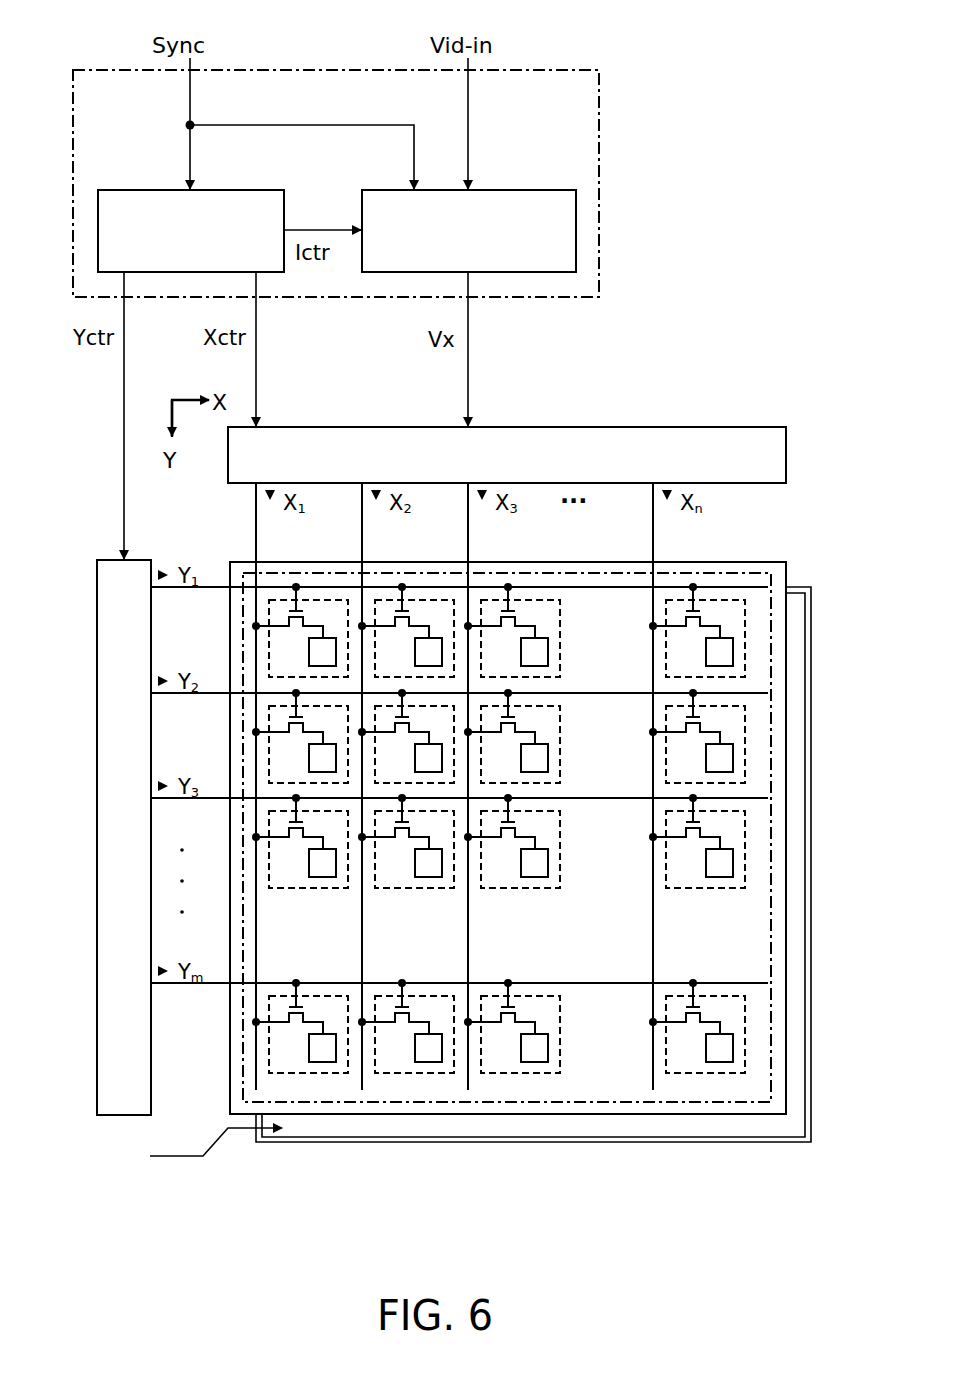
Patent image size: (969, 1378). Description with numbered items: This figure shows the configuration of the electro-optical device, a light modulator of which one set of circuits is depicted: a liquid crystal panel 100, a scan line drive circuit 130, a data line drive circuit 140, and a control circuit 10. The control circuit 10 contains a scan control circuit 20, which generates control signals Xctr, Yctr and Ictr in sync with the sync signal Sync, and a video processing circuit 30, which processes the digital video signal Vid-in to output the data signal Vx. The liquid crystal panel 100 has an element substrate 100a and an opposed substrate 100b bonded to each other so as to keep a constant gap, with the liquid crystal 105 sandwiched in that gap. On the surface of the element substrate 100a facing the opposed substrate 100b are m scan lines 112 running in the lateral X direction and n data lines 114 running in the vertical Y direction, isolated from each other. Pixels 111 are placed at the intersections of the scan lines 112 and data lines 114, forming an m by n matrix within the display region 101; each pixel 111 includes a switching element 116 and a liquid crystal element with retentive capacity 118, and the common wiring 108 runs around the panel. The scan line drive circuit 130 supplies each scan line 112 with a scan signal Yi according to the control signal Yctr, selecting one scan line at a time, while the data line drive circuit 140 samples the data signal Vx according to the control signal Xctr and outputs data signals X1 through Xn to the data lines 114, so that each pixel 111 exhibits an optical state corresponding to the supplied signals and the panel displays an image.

The control circuit 10 is at (544, 297).
The scan control circuit 20 is at (126, 188).
The video processing circuit 30 is at (390, 188).
The data line drive circuit 140 is at (654, 426).
The scan line drive circuit 130 is at (97, 587).
The liquid crystal 105 is at (824, 583).
The liquid crystal panel 100 is at (533, 903).
The element substrate 100a is at (548, 1116).
The opposed substrate 100b is at (535, 1143).
The display region 101 is at (243, 1097).
The common electrode wiring 108 is at (430, 1140).
The scan line 112 is at (568, 589).
The data line 114 is at (258, 905).
The pixel 111 is at (561, 658).
The thin film transistor 116 is at (510, 838).
The liquid crystal capacitor 118 is at (548, 863).